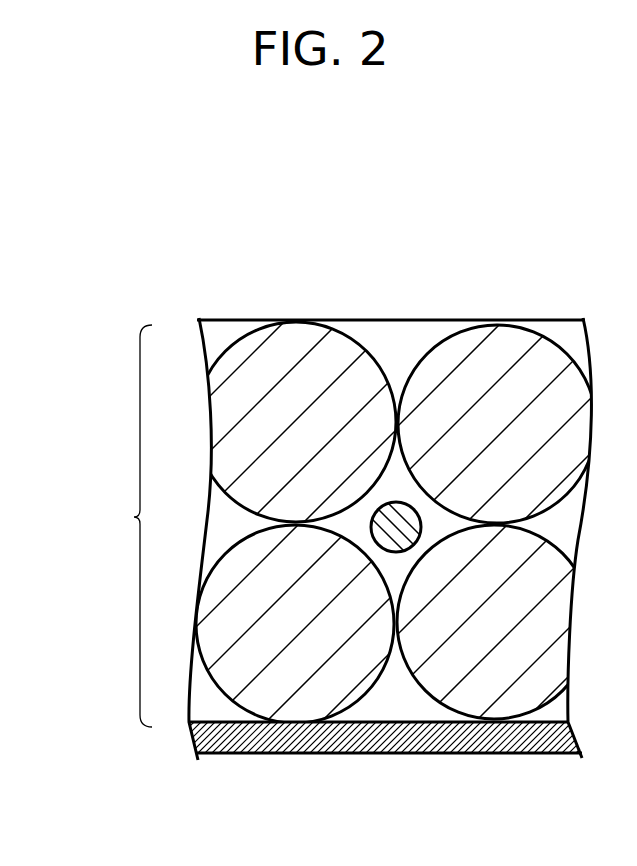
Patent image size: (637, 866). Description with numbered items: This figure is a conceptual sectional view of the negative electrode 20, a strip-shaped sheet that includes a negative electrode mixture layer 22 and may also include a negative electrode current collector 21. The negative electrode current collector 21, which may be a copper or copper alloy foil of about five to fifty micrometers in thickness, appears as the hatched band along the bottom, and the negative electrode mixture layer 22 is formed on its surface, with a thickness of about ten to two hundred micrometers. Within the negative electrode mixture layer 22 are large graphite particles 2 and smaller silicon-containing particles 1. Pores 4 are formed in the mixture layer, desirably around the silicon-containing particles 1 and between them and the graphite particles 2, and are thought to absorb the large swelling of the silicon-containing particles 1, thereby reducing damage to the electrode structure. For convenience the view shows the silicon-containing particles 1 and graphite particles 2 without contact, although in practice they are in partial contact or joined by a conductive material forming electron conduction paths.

The negative electrode 20 is at (105, 250).
The graphite particles 2 is at (315, 367).
The silicon-containing particles 1 is at (400, 512).
The pores 4 is at (440, 523).
The negative electrode current collector 21 is at (378, 753).
The negative electrode mixture layer 22 is at (118, 526).